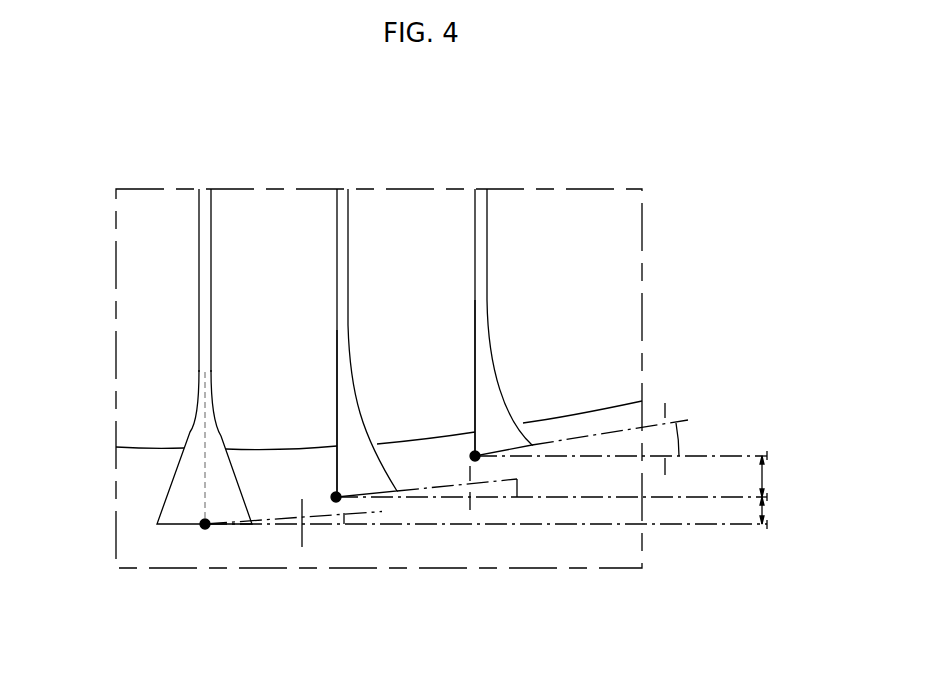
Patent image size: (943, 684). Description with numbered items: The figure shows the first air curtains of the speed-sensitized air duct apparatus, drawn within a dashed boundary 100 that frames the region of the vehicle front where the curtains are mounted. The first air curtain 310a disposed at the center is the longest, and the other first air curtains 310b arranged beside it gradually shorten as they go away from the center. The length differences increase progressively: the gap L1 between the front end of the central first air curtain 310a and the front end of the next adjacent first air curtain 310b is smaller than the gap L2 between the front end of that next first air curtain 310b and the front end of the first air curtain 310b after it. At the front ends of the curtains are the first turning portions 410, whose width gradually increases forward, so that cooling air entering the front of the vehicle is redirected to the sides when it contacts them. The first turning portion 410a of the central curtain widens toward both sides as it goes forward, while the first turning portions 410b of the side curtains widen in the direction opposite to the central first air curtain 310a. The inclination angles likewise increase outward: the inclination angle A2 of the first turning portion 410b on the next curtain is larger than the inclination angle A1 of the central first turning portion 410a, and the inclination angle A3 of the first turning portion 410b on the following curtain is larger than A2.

The compressor / impeller body region 100 is at (137, 273).
The first air curtain disposed at the center 310a is at (206, 200).
The other first air curtains 310b is at (345, 200).
The first turning portions 410 is at (469, 472).
The first turning portion of the central first air curtain 410a is at (185, 512).
The first turning portions of the other first air curtains 410b is at (352, 464).
The inclination angle A1 is at (344, 520).
The inclination angle A2 is at (517, 488).
The inclination angle A3 is at (691, 439).
The gap L1 is at (780, 511).
The gap L2 is at (780, 476).